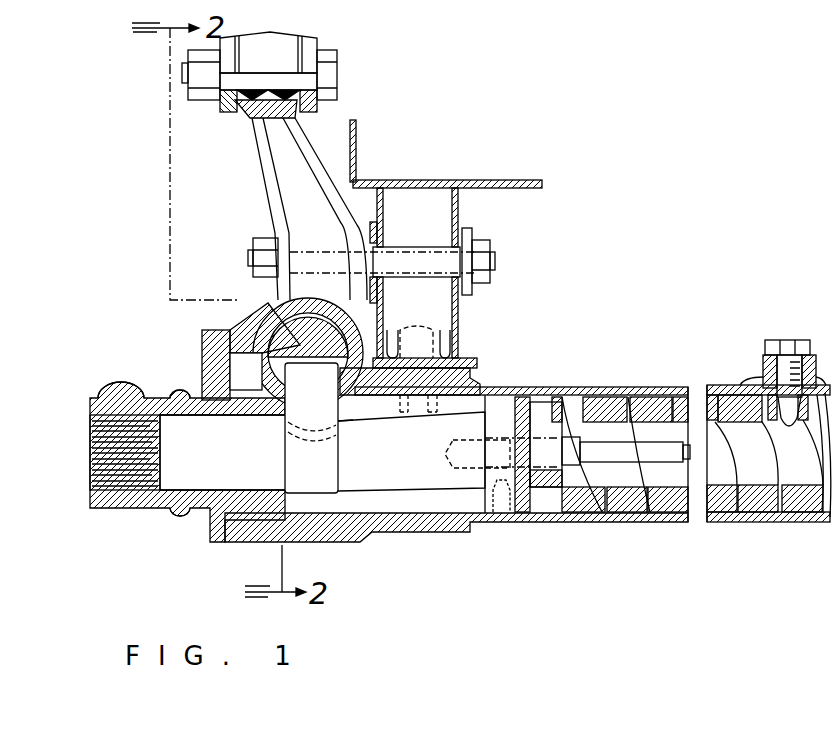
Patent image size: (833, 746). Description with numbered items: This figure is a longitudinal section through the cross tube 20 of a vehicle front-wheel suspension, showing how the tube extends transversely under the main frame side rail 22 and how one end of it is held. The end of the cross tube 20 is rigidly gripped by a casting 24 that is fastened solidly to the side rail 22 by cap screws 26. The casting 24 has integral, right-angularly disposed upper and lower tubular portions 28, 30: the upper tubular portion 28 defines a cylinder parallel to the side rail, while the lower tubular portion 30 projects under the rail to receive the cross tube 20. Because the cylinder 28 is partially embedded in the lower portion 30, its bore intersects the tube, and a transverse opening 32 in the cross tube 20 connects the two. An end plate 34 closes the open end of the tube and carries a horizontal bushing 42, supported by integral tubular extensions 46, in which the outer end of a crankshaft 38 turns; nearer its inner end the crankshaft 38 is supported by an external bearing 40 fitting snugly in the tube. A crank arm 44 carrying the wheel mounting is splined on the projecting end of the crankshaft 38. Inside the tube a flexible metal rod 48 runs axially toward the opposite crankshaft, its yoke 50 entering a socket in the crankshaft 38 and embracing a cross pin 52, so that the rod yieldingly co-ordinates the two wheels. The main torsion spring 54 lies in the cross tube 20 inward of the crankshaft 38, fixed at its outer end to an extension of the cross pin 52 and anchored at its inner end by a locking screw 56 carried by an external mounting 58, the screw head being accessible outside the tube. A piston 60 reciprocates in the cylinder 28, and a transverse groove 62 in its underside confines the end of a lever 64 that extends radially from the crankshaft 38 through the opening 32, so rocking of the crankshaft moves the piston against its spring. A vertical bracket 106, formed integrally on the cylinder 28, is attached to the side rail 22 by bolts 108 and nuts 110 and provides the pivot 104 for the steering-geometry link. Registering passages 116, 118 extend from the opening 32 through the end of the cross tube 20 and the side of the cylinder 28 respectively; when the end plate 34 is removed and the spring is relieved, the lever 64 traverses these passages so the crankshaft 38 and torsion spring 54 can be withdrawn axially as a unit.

The cross tube 20 is at (540, 395).
The main frame side rail 22 is at (460, 220).
The casting 24 is at (242, 316).
The cap screws 26 is at (415, 340).
The upper tubular portion 28 is at (368, 322).
The lower tubular portion 30 is at (403, 528).
The transverse opening 32 is at (348, 412).
The end plate 34 is at (200, 395).
The crankshaft 38 is at (430, 480).
The external bearing 40 is at (508, 388).
The horizontal bushing 42 is at (212, 410).
The crank arm 44 is at (90, 413).
The tubular extensions 46 is at (188, 394).
The flexible metal rod 48 is at (633, 420).
The yoke 50 is at (613, 452).
The cross pin 52 is at (542, 405).
The main torsion spring 54 is at (595, 505).
The locking screw 56 is at (797, 343).
The external mounting 58 is at (775, 366).
The piston 60 is at (302, 335).
The transverse groove 62 is at (318, 335).
The lever 64 is at (326, 393).
The pivot 104 is at (265, 76).
The vertical bracket 106 is at (272, 176).
The bolts 108 is at (256, 248).
The nuts 110 is at (494, 262).
The passage 116 is at (242, 386).
The passage 118 is at (242, 352).